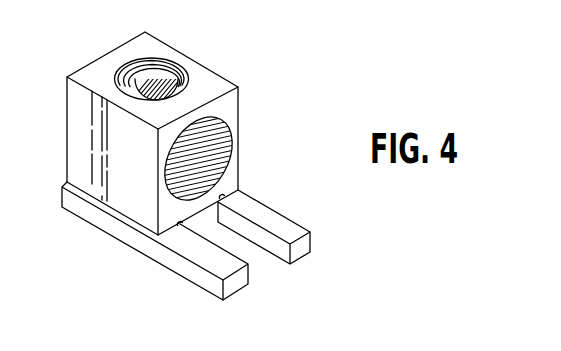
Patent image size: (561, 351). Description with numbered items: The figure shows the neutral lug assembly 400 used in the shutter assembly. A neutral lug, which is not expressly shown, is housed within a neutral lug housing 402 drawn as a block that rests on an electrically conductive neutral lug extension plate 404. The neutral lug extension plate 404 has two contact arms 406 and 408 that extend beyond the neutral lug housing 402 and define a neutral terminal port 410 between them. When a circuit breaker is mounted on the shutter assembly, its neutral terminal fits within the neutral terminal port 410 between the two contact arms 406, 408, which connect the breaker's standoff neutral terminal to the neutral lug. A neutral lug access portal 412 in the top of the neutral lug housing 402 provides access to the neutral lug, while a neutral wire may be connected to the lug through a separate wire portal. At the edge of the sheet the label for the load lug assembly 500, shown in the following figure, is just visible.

The neutral lug assembly 400 is at (247, 58).
The neutral lug housing 402 is at (99, 80).
The neutral lug extension plate 404 is at (131, 236).
The contact arm 406 is at (235, 285).
The contact arm 408 is at (303, 241).
The neutral terminal port 410 is at (263, 265).
The neutral lug access portal 412 is at (173, 75).
The load lug assembly 500 is at (442, 350).